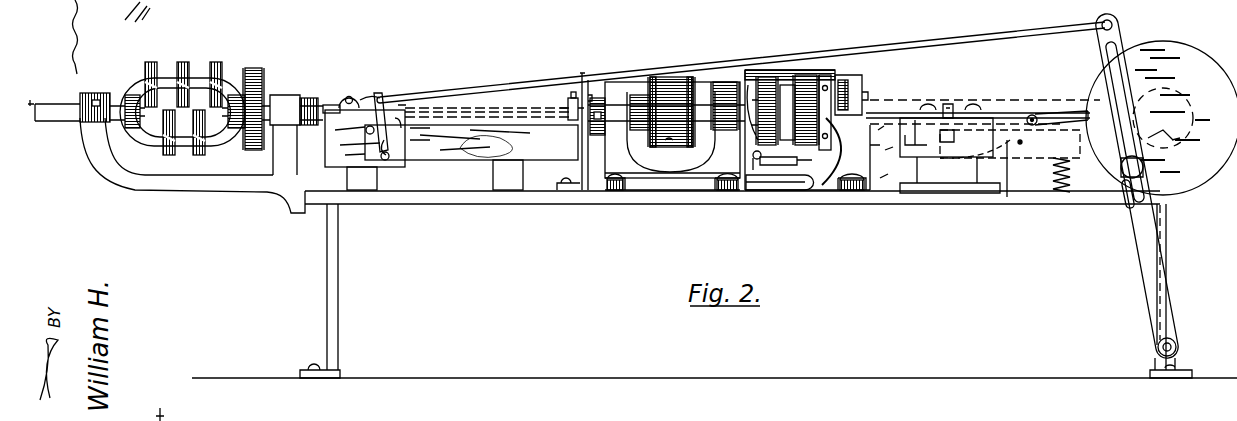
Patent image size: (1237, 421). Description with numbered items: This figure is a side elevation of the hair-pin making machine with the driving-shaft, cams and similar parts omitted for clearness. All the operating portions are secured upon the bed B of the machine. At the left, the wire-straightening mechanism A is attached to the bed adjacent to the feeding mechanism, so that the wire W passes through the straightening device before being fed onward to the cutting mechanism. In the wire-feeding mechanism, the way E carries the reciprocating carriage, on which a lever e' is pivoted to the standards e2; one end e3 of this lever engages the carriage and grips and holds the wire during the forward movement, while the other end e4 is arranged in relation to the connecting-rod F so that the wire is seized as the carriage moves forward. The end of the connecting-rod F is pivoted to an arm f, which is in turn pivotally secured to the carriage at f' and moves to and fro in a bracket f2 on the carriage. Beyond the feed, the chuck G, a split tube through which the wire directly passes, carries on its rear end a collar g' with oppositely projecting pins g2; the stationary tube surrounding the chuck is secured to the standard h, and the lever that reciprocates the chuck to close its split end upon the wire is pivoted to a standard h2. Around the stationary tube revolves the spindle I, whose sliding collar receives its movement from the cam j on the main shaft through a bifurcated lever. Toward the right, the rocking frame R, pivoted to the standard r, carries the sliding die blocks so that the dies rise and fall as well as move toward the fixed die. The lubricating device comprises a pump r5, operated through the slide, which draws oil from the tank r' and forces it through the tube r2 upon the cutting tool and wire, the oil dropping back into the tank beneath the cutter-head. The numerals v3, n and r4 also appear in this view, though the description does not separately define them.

The wire-straightening mechanism A is at (186, 60).
The wire w is at (40, 116).
The bed of the machine B is at (696, 196).
The way E is at (476, 145).
The lever end e3 is at (329, 104).
The standards e2 is at (349, 94).
The lever e' is at (378, 114).
The lever end e4 is at (408, 92).
The arm f is at (386, 119).
The pivot f' is at (390, 151).
The bracket f2 is at (422, 136).
The collar g' is at (564, 106).
The pins g2 is at (569, 90).
The chuck G is at (583, 72).
The connecting-rod F is at (669, 76).
The spindle I is at (708, 104).
The bracket v3 is at (676, 142).
The cam j is at (790, 68).
The pump r5 is at (804, 192).
The rod n is at (1012, 111).
The standard h is at (944, 131).
The standard h2 is at (975, 147).
The rocking frame R is at (1014, 154).
The standard r is at (985, 175).
The tank r' is at (882, 157).
The arm r4 is at (886, 156).
The tube r2 is at (888, 175).